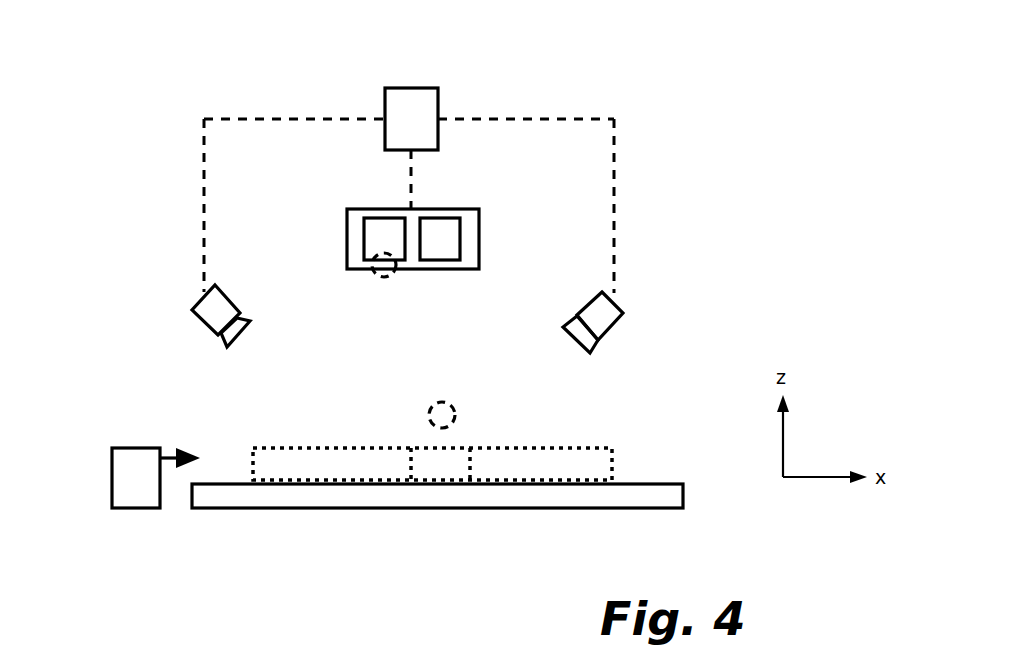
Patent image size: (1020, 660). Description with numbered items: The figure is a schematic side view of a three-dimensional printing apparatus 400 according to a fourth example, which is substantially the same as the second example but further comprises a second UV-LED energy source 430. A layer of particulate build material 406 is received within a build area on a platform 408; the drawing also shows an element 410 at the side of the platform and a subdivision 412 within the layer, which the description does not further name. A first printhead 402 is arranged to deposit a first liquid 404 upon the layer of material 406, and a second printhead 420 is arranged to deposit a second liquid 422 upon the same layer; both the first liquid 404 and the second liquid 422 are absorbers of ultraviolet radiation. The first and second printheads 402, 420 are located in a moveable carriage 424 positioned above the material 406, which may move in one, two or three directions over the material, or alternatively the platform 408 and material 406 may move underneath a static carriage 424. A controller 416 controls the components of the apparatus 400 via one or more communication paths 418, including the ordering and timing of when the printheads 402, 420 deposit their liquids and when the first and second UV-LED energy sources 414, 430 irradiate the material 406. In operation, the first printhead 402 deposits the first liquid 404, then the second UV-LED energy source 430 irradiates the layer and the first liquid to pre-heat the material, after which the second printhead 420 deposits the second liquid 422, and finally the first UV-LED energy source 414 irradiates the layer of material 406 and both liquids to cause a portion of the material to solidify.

The three-dimensional printing apparatus 400 is at (712, 91).
The first printhead 402 is at (460, 231).
The first liquid 404 is at (443, 402).
The layer of particulate build material 406 is at (600, 447).
The platform 408 is at (273, 510).
The recoater 410 is at (108, 493).
The layer segment 412 is at (465, 455).
The first UV-LED energy source 414 is at (625, 315).
The controller 416 is at (408, 88).
The communication paths 418 is at (528, 120).
The second printhead 420 is at (363, 231).
The second liquid 422 is at (390, 281).
The moveable carriage 424 is at (357, 270).
The second UV-LED energy source 430 is at (200, 319).